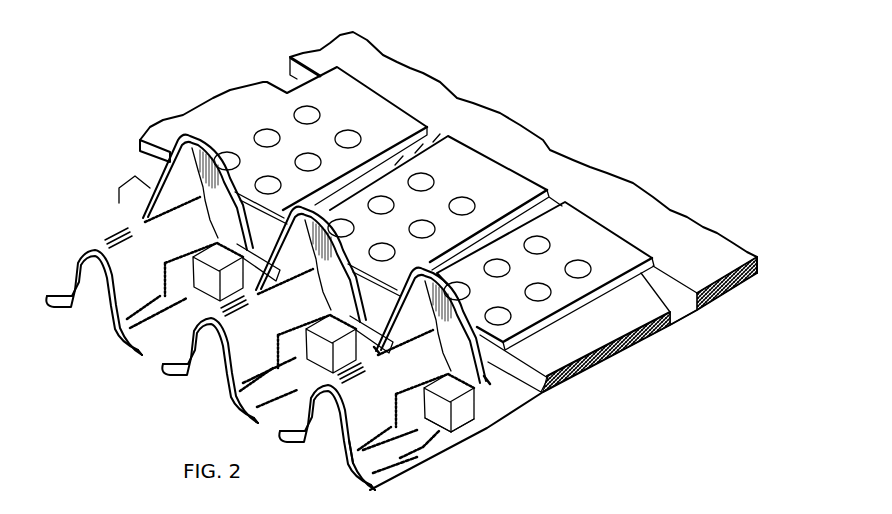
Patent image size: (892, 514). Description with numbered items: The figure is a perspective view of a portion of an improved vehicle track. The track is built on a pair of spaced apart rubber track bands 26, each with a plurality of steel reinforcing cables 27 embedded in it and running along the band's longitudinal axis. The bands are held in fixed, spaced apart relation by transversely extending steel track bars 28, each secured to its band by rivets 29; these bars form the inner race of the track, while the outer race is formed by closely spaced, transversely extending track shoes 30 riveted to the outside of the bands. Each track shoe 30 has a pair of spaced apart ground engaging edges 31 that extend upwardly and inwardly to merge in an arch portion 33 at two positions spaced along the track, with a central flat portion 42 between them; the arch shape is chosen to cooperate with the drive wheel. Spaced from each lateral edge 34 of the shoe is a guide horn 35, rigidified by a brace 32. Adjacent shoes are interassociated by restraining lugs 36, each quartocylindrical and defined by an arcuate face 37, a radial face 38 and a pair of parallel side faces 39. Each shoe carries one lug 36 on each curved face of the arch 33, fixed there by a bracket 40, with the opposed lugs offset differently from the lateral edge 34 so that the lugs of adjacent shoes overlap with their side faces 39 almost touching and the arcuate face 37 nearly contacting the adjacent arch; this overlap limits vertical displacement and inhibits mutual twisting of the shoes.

The rubber track band 26 is at (675, 225).
The reinforcing cable 27 is at (593, 367).
The track bar 28 is at (581, 218).
The rivet 29 is at (578, 266).
The track shoe 30 is at (421, 469).
The ground engaging edge 31 is at (370, 492).
The brace 32 is at (424, 308).
The arch portion 33 is at (345, 445).
The lateral edge 34 is at (348, 460).
The guide horn 35 is at (420, 267).
The restraining lug 36 is at (377, 349).
The arcuate face 37 is at (468, 415).
The radial face 38 is at (481, 394).
The side face 39 is at (450, 427).
The bracket 40 is at (393, 420).
The central flat portion 42 is at (508, 350).